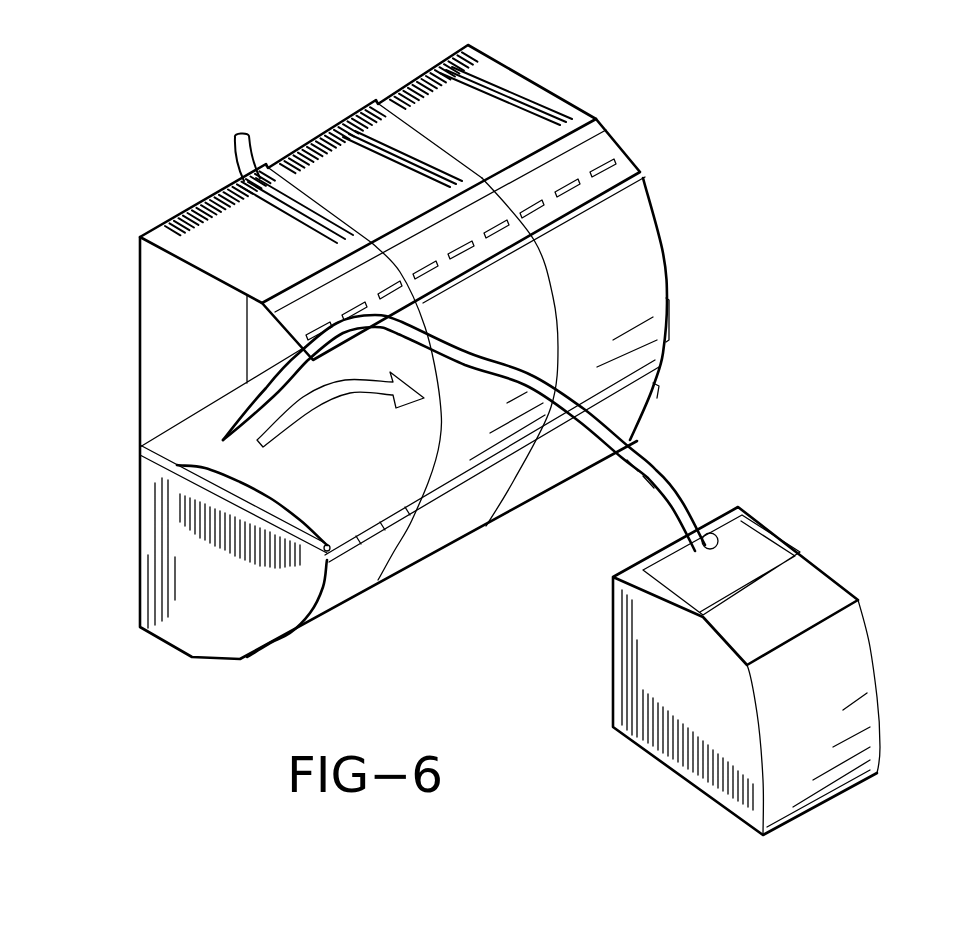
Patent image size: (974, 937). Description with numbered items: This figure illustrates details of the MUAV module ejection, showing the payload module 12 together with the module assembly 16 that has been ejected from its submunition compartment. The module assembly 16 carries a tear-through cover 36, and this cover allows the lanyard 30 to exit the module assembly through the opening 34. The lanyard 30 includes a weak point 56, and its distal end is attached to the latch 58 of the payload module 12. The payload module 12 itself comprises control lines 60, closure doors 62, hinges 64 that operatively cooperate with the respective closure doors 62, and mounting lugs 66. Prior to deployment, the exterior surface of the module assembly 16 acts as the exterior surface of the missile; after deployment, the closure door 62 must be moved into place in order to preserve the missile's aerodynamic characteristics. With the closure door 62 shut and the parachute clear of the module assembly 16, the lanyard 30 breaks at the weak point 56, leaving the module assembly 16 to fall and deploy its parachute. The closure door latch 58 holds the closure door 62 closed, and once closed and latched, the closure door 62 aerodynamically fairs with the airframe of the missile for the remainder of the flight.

The payload module 12 is at (92, 264).
The module assembly 16 is at (637, 233).
The lanyard 30 is at (528, 372).
The opening 34 is at (708, 532).
The tear-through cover 36 is at (752, 540).
The weak point 56 is at (648, 460).
The latch 58 is at (620, 150).
The control lines 60 is at (240, 152).
The closure doors 62 is at (623, 285).
The hinges 64 is at (377, 513).
The mounting lugs 66 is at (668, 312).